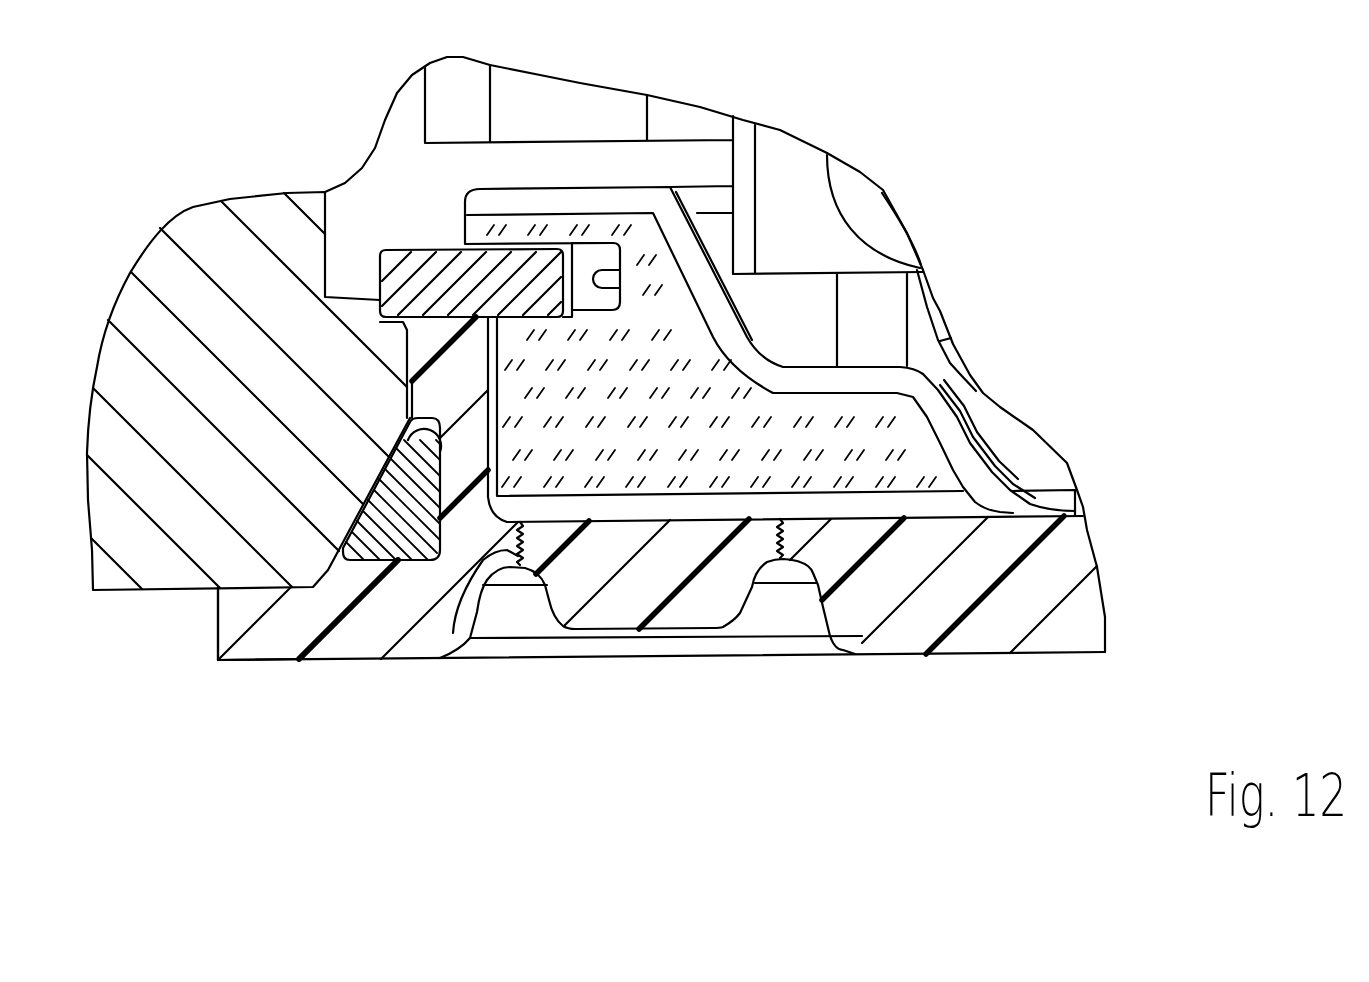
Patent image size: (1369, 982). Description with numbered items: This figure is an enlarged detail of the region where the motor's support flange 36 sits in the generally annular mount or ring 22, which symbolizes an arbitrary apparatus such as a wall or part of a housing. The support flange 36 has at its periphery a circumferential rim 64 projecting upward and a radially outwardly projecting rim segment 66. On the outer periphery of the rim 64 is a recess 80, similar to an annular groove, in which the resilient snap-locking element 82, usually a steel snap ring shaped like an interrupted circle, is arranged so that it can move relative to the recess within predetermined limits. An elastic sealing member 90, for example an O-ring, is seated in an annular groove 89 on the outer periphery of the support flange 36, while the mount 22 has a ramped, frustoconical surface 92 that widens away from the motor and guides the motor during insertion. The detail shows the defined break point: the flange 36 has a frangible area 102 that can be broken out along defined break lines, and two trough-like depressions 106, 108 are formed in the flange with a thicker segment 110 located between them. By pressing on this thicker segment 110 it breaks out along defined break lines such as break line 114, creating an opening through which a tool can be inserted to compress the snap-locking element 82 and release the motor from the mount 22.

The mount or ring 22 is at (190, 297).
The resilient snap-locking element 82 is at (430, 273).
The recess 80 is at (618, 290).
The annular groove 89 is at (415, 420).
The circumferential rim 64 is at (463, 447).
The rim segment 66 is at (250, 622).
The ramped frustoconical surface 92 is at (350, 573).
The elastic sealing member 90 is at (383, 513).
The frangible area 102 is at (453, 633).
The trough-like depression 106 is at (522, 577).
The thicker segment 110 is at (637, 598).
The trough-like depression 108 is at (780, 570).
The break line 114 is at (785, 552).
The support flange 36 is at (983, 622).